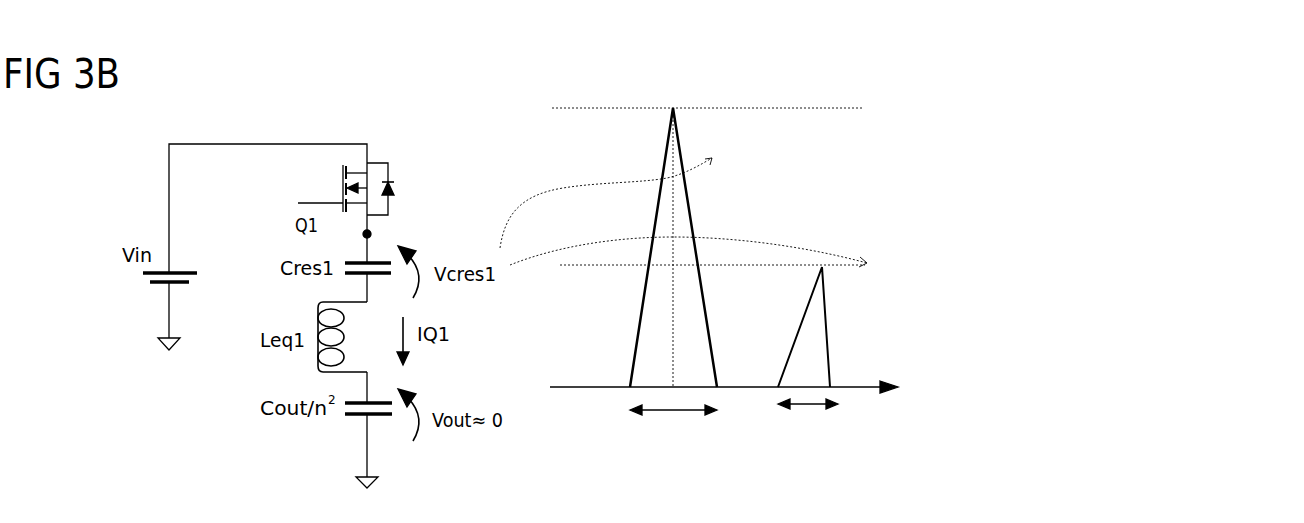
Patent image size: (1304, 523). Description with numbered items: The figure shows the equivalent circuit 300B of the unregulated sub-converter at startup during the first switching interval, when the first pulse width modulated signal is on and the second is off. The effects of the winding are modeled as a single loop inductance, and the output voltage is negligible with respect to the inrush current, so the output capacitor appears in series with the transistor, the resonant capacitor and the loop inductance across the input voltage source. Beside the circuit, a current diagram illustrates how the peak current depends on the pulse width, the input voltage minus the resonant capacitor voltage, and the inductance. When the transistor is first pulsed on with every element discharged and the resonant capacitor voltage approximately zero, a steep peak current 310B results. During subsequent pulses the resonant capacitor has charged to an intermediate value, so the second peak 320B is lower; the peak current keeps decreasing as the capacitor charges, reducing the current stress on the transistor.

The equivalent circuit 300B is at (1117, 61).
The peak current 310B is at (637, 310).
The second peak 320B is at (805, 322).